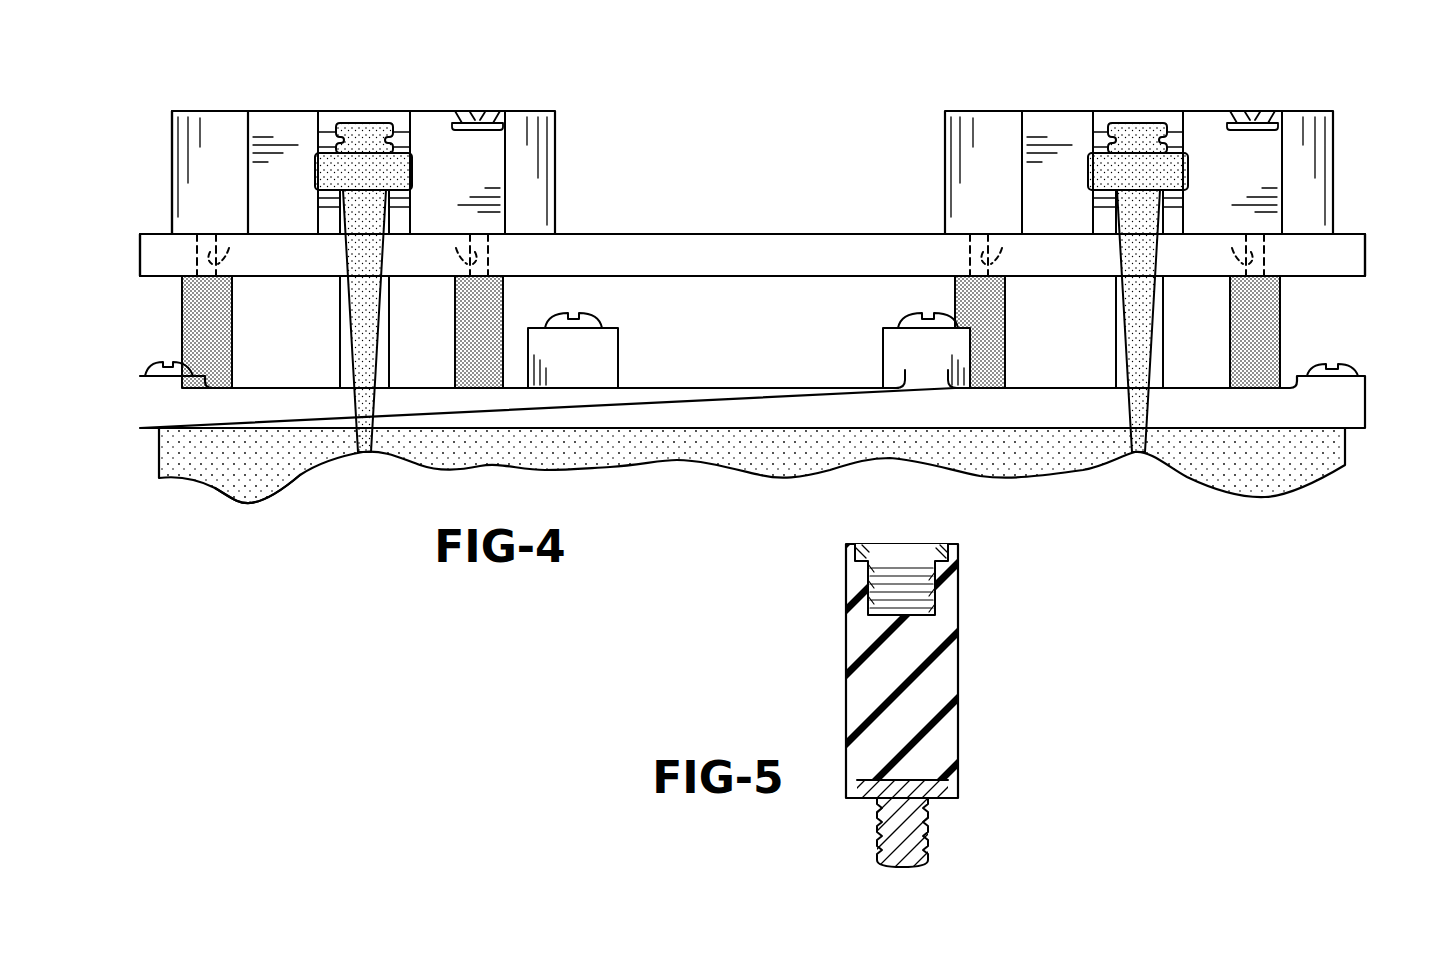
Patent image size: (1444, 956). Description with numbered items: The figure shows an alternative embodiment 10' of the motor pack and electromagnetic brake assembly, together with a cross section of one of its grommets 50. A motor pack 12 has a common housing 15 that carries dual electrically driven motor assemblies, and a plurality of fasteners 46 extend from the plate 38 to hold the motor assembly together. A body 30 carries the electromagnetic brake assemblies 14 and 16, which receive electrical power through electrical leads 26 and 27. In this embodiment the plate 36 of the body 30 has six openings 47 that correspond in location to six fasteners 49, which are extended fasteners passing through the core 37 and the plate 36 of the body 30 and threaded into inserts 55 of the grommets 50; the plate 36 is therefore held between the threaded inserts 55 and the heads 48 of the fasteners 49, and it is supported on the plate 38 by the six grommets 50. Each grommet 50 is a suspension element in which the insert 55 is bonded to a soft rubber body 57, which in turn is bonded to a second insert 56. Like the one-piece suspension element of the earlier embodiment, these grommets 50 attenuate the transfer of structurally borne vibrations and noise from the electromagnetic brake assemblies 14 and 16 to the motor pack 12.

In FIG. 4, the alternative embodiment of the motor pack and electromagnetic brake assembly 10' is at (770, 81).
In FIG. 4, the motor pack 12 is at (216, 474).
In FIG. 4, the electromagnetic brake assembly 14 is at (1336, 146).
In FIG. 4, the common housing 15 is at (262, 464).
In FIG. 4, the electromagnetic brake assembly 16 is at (556, 146).
In FIG. 4, the electrical lead 26 is at (362, 440).
In FIG. 4, the electrical lead 27 is at (1137, 440).
In FIG. 4, the body 30 is at (817, 202).
In FIG. 4, the plate 36 is at (677, 255).
In FIG. 4, the core 37 is at (225, 135).
In FIG. 4, the plate 38 is at (175, 412).
In FIG. 4, the fasteners 46 is at (163, 365).
In FIG. 4, the openings 47 is at (218, 265).
In FIG. 4, the heads 48 is at (472, 112).
In FIG. 4, the fasteners 49 is at (485, 118).
In FIG. 4, the grommets 50 is at (182, 306).
In FIG. 5, the grommets 50 is at (900, 623).
In FIG. 5, the inserts 55 is at (943, 552).
In FIG. 5, the inserts 56 is at (912, 843).
In FIG. 5, the soft rubber body 57 is at (933, 748).